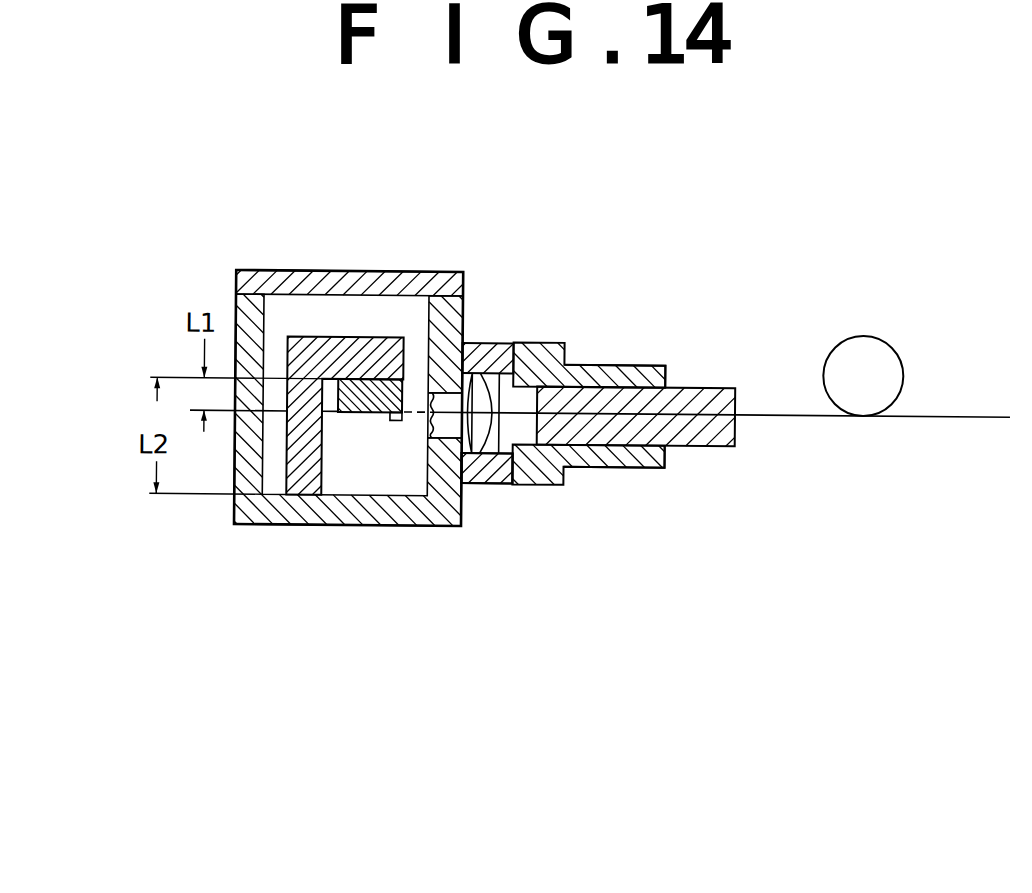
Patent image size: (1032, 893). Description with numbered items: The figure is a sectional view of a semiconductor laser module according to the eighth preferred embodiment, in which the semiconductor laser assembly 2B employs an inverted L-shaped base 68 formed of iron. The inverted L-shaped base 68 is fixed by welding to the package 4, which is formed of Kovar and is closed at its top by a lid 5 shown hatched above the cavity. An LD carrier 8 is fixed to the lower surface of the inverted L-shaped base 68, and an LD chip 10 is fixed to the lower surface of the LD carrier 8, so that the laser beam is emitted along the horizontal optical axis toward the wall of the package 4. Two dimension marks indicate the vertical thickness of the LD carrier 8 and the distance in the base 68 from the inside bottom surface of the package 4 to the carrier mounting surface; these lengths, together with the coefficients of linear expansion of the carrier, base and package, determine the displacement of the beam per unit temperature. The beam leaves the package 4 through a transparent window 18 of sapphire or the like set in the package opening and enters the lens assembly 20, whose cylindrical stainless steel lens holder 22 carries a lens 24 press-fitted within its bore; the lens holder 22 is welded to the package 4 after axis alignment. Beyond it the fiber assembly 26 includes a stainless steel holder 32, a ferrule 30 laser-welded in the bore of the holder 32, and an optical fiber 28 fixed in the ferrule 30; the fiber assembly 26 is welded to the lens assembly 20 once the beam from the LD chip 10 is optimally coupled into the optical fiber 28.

The semiconductor laser assembly 2B is at (393, 268).
The package 4 is at (283, 518).
The lid plate 5 is at (280, 271).
The inverted L-shaped base 68 is at (339, 337).
The LD carrier 8 is at (350, 398).
The LD chip 10 is at (393, 421).
The transparent window 18 is at (431, 428).
The lens assembly 20 is at (482, 338).
The lens holder 22 is at (488, 483).
The lens 24 is at (492, 384).
The fiber assembly 26 is at (642, 359).
The optical fiber 28 is at (858, 331).
The ferrule 30 is at (720, 397).
The holder 32 is at (612, 465).